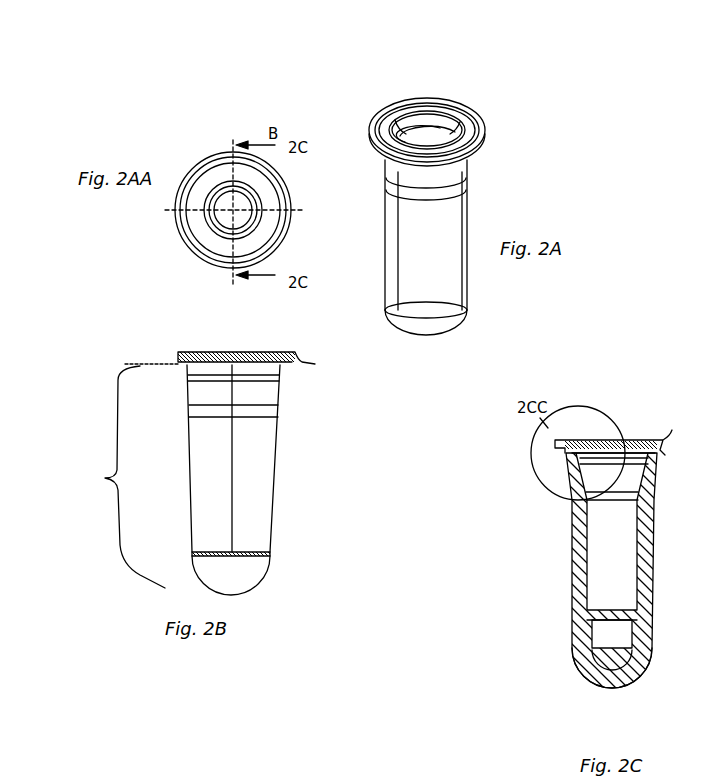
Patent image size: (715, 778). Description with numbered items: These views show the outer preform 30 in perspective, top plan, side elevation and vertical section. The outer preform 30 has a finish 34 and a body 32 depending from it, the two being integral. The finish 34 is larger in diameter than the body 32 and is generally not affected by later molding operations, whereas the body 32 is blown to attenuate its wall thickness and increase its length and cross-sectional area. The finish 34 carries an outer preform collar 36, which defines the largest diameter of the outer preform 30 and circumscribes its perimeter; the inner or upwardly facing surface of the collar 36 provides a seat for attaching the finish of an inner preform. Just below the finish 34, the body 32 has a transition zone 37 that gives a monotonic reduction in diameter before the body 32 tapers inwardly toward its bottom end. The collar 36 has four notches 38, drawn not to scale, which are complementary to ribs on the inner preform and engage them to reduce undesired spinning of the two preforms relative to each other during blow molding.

In FIG. 2AA, the outer preform 30 is at (190, 130).
In FIG. 2A, the outer preform 30 is at (462, 290).
In FIG. 2B, the outer preform 30 is at (262, 533).
In FIG. 2C, the outer preform 30 is at (648, 600).
In FIG. 2A, the body of the outer preform 32 is at (442, 260).
In FIG. 2B, the body of the outer preform 32 is at (255, 457).
In FIG. 2C, the body of the outer preform 32 is at (693, 490).
In FIG. 2A, the finish of the outer preform 34 is at (384, 118).
In FIG. 2B, the finish of the outer preform 34 is at (165, 352).
In FIG. 2C, the finish of the outer preform 34 is at (648, 245).
In FIG. 2A, the outer preform collar 36 is at (484, 130).
In FIG. 2B, the outer preform collar 36 is at (316, 365).
In FIG. 2C, the outer preform collar 36 is at (670, 436).
In FIG. 2A, the transition zone 37 is at (468, 181).
In FIG. 2B, the transition zone 37 is at (288, 377).
In FIG. 2A, the notches 38 is at (397, 105).